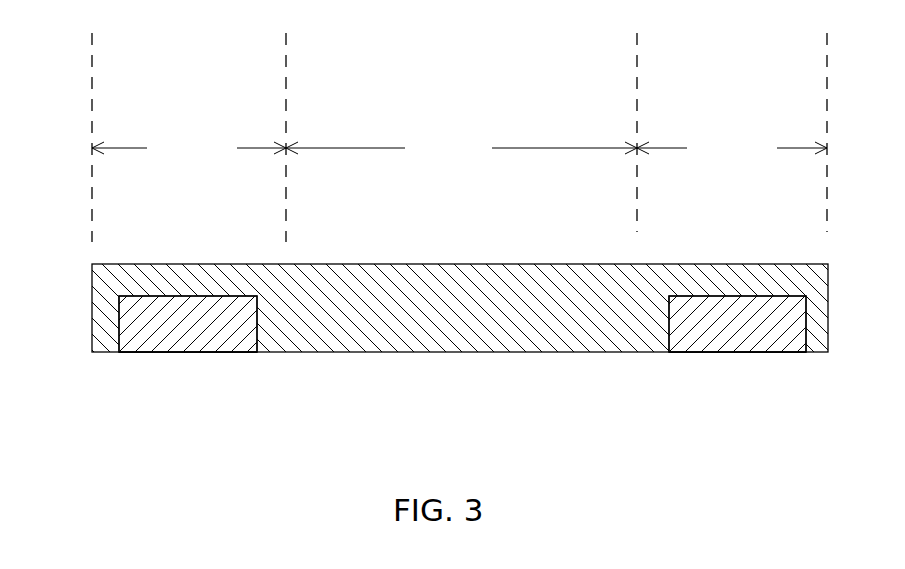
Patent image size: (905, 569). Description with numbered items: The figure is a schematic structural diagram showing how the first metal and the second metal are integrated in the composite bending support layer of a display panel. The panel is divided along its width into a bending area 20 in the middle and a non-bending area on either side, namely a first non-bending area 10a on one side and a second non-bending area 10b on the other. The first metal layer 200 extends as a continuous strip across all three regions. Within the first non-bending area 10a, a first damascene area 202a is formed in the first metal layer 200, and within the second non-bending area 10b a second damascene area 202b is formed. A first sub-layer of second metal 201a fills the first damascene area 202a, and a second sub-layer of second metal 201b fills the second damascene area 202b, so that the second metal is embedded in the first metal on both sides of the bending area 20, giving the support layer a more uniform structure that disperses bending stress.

The first non-bending area 10a is at (189, 137).
The second non-bending area 10b is at (732, 132).
The bending area 20 is at (461, 132).
The first metal layer 200 is at (415, 320).
The first sub-layer of second metal 201a is at (228, 337).
The second sub-layer of second metal 201b is at (730, 330).
The first damascene area 202a is at (139, 354).
The second damascene area 202b is at (773, 354).